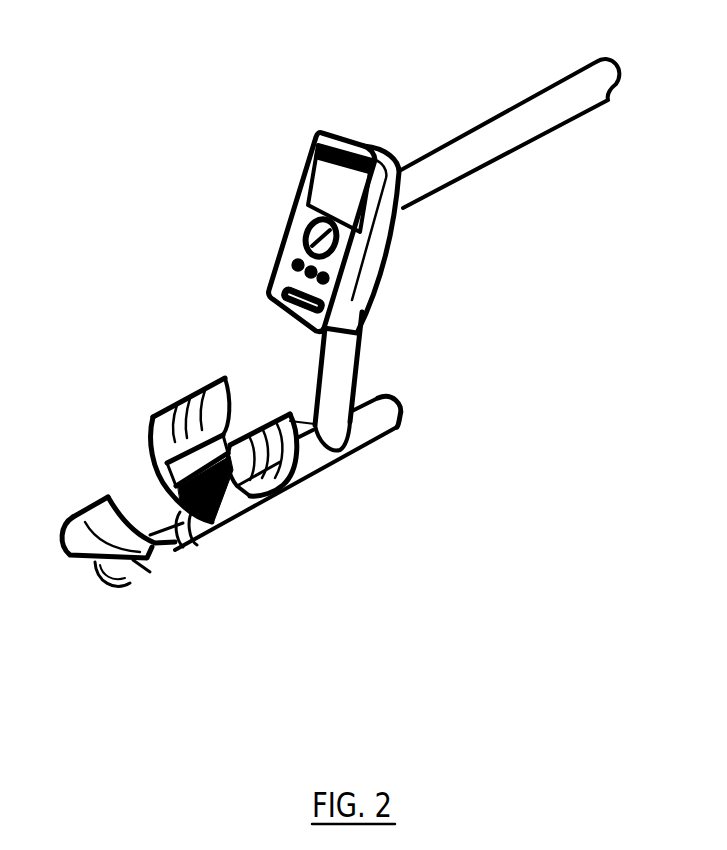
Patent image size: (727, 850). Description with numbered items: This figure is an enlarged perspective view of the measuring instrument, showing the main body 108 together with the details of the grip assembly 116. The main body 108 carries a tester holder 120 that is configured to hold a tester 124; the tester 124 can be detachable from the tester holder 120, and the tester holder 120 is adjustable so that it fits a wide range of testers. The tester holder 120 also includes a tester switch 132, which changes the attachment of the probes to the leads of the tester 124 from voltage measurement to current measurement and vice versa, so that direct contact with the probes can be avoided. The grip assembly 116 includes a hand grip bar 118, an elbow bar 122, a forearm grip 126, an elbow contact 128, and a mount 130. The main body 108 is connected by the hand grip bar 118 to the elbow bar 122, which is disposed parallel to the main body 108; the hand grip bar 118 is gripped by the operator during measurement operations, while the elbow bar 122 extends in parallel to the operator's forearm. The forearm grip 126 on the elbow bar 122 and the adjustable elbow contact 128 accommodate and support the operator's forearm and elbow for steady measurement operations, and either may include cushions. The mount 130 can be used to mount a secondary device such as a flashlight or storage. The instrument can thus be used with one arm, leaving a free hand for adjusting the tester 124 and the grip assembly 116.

The main body 108 is at (570, 119).
The grip assembly 116 is at (357, 371).
The hand grip bar 118 is at (357, 332).
The tester holder 120 is at (337, 132).
The elbow bar 122 is at (303, 483).
The tester 124 is at (297, 217).
The forearm grip 126 is at (150, 443).
The elbow contact 128 is at (68, 555).
The mount 130 is at (403, 403).
The tester switch 132 is at (290, 317).